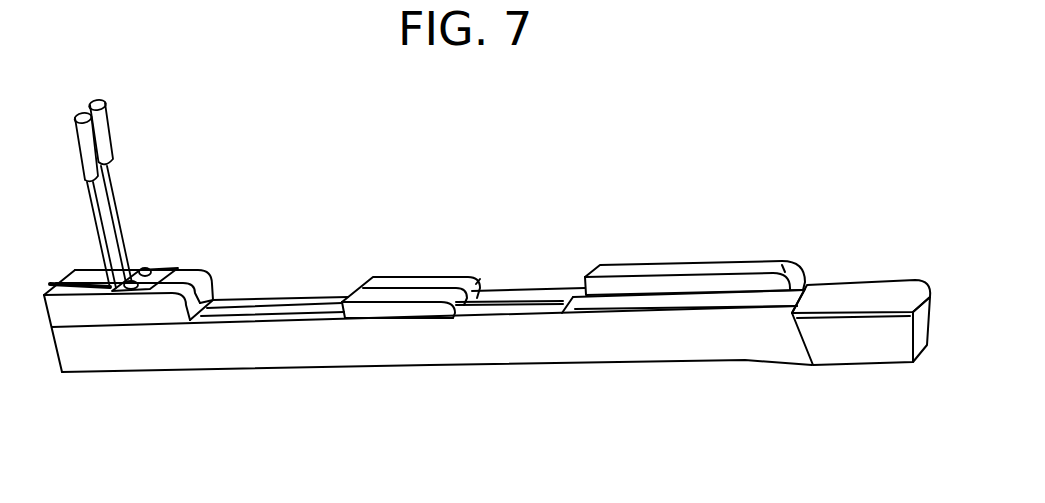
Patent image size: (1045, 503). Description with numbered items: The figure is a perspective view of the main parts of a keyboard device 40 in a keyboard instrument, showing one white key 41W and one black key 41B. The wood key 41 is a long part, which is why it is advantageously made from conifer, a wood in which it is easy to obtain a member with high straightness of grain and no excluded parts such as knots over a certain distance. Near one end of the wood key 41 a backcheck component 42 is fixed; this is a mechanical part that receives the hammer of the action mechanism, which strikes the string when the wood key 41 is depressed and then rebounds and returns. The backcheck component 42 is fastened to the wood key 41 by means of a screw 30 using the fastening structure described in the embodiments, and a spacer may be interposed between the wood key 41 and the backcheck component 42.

The keyboard device 40 is at (652, 224).
The wood key 41 is at (432, 347).
The black key 41B is at (738, 262).
The white key 41W is at (862, 293).
The backcheck component 42 is at (90, 135).
The screw 30 is at (133, 280).